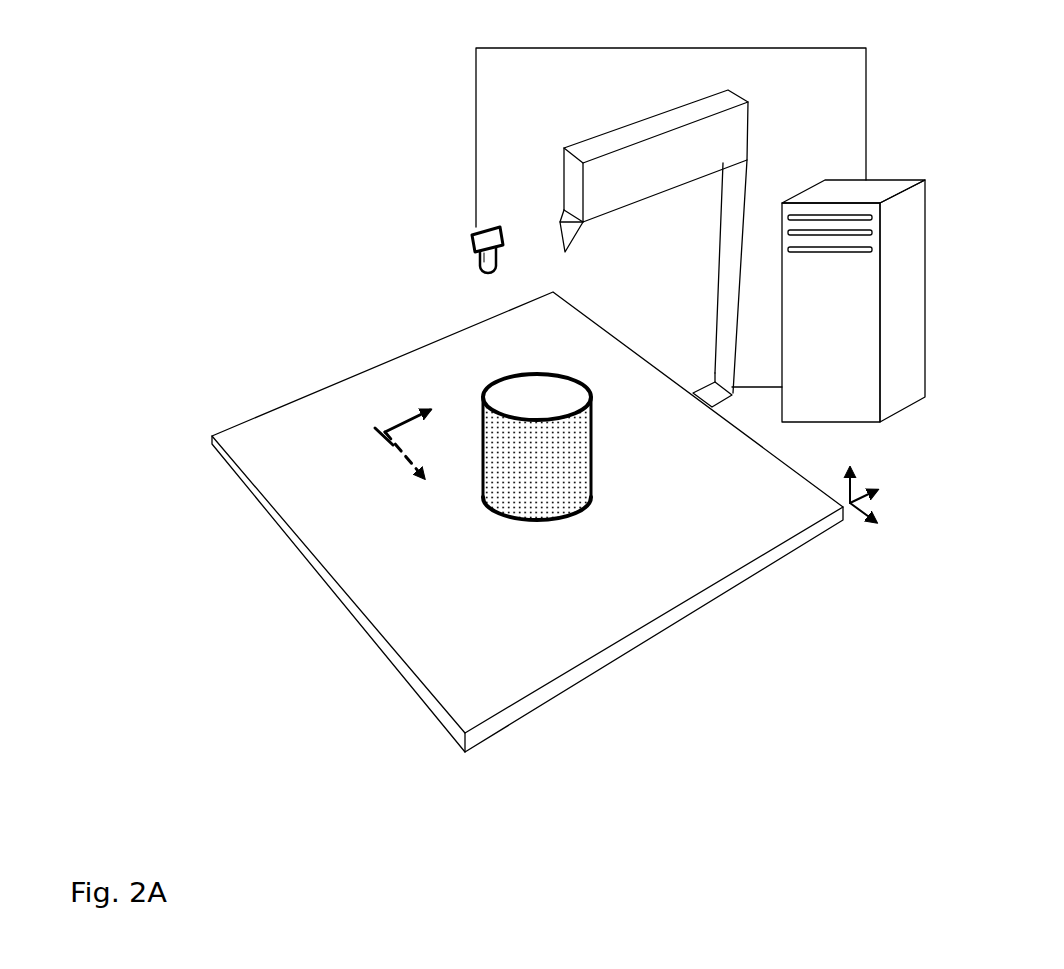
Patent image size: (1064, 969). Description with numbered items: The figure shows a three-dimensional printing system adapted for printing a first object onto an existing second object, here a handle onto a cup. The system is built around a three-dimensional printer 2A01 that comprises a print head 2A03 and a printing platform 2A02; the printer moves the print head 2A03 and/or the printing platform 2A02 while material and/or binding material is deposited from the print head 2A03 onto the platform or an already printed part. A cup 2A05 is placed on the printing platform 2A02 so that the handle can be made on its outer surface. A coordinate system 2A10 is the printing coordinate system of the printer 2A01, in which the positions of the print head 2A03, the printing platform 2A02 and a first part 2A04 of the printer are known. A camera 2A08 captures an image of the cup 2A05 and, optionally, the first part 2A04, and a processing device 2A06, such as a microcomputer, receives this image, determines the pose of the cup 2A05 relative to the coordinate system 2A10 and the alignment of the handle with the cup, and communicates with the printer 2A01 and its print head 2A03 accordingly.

The 3D printer 2A01 is at (328, 328).
The printing platform 2A02 is at (403, 630).
The print head 2A03 is at (552, 222).
The first part of the 3D printer 2A04 is at (373, 425).
The cup 2A05 is at (592, 518).
The processing device 2A06 is at (940, 252).
The camera 2A08 is at (452, 223).
The coordinate system 2A10 is at (912, 470).